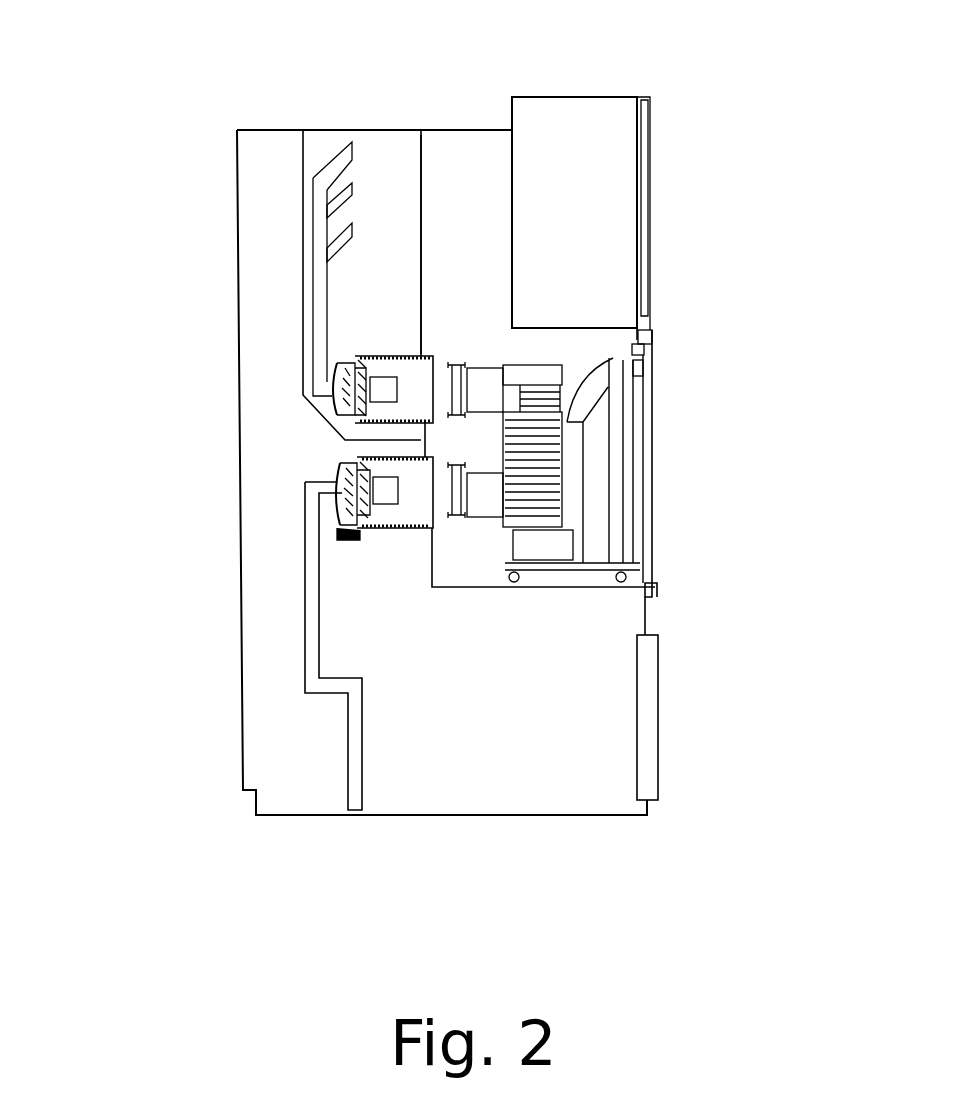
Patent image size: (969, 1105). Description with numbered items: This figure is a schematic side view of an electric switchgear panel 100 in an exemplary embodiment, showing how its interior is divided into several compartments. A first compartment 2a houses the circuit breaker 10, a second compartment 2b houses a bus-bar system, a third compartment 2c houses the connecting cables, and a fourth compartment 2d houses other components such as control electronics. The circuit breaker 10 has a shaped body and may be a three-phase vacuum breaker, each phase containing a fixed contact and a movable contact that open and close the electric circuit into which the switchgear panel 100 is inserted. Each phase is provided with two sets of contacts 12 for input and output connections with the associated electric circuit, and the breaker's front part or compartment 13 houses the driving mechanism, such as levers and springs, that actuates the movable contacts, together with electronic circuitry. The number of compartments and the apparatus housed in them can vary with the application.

The switchgear panel 100 is at (152, 137).
The first compartment 2a is at (469, 168).
The second compartment 2b is at (370, 172).
The third compartment 2c is at (303, 729).
The fourth compartment 2d is at (594, 152).
The circuit breaker 10 is at (553, 438).
The sets of contacts 12 is at (470, 393).
The front part or compartment 13 is at (598, 550).